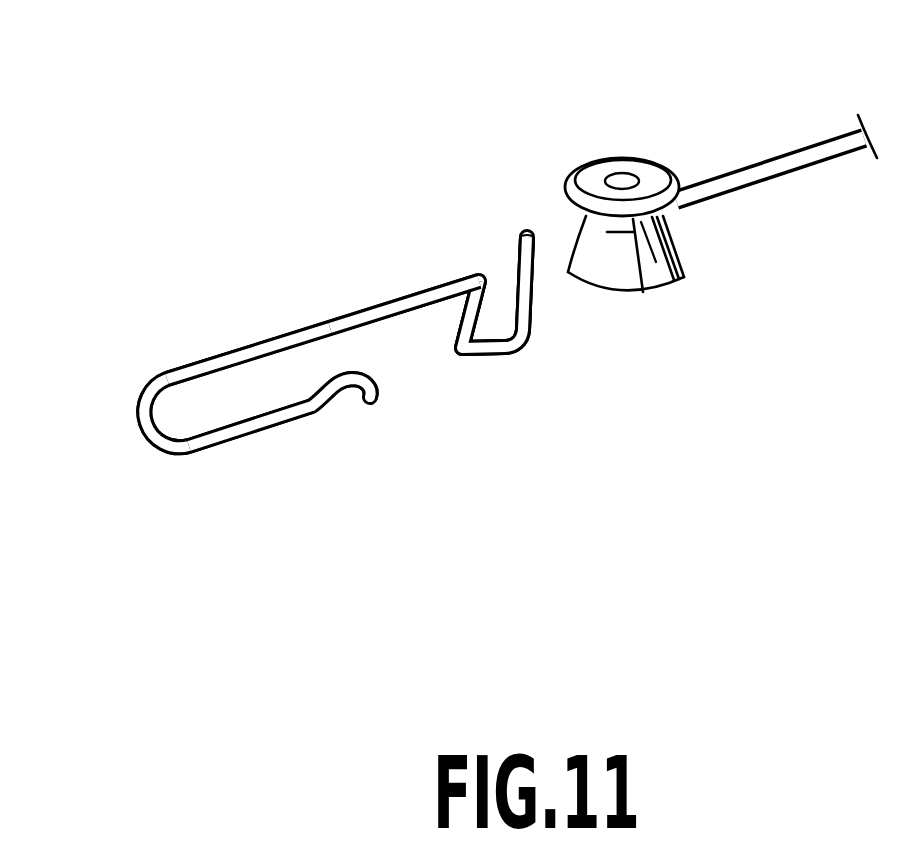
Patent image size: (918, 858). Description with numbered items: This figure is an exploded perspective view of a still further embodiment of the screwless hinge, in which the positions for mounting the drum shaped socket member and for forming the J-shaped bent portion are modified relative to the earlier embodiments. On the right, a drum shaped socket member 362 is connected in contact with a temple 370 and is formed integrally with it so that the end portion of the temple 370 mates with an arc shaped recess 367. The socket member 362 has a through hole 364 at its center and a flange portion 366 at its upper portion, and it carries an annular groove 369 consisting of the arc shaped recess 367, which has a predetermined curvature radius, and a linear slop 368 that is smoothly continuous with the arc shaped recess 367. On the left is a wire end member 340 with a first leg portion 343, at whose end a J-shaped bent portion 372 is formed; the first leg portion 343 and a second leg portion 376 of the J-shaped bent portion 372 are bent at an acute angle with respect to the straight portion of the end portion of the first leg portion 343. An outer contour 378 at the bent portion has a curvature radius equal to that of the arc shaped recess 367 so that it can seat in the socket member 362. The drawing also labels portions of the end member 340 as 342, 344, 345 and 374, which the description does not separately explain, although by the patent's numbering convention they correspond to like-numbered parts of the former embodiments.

The end member 340 is at (325, 343).
The loop end of clip 342 is at (138, 405).
The first leg portion 343 is at (258, 350).
The second leg of clip 344 is at (270, 423).
The hooked tip of second leg 345 is at (343, 392).
The drum shaped socket member 362 is at (610, 177).
The through hole 364 is at (626, 176).
The flange portion 366 is at (567, 175).
The arc shaped recess 367 is at (687, 280).
The linear slop 368 is at (720, 245).
The annular groove 369 is at (686, 182).
The temple 370 is at (783, 157).
The J-shaped bent portion 372 is at (487, 208).
The end portion of clip 374 is at (535, 275).
The second leg portion 376 is at (423, 292).
The outer contour 378 is at (478, 276).